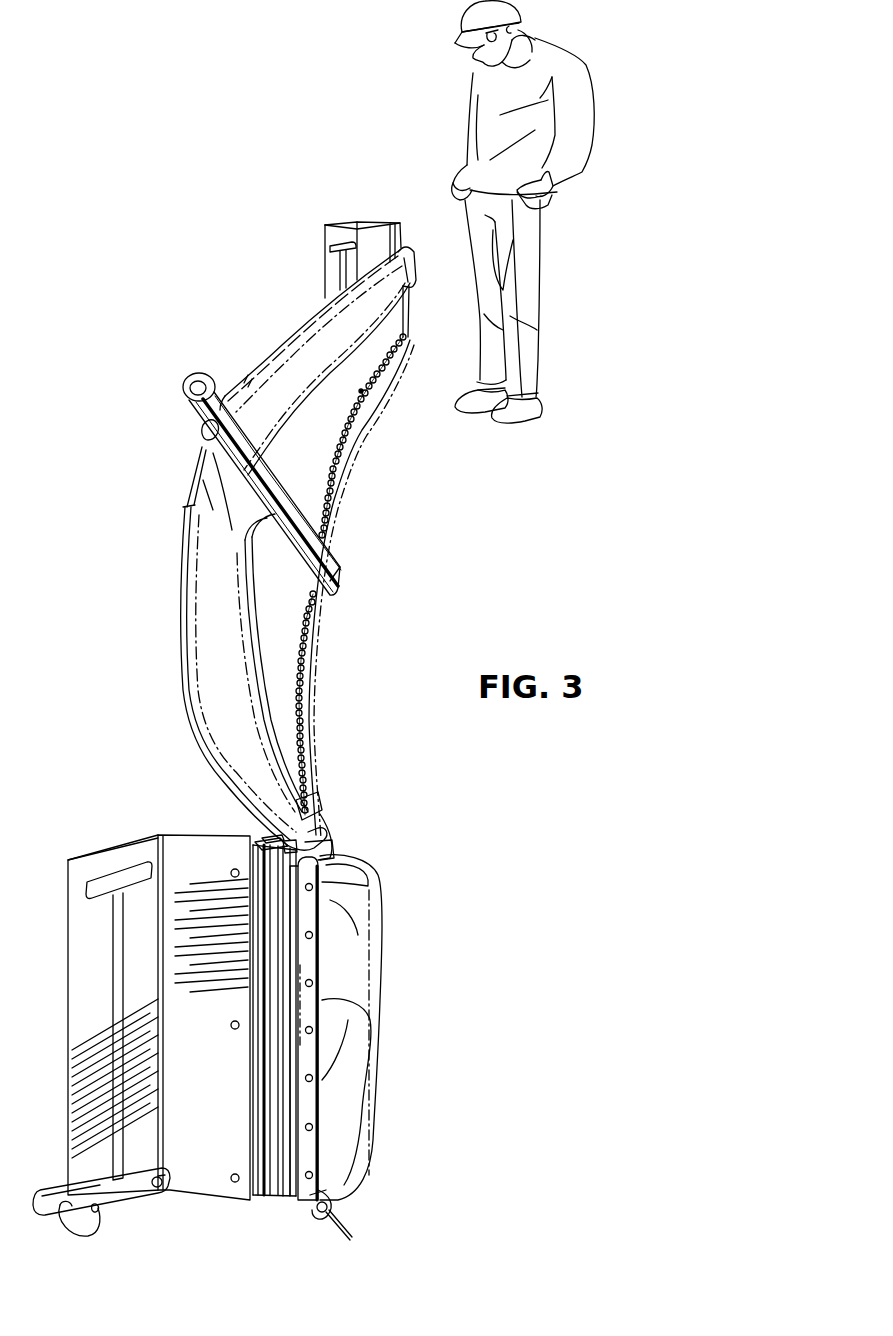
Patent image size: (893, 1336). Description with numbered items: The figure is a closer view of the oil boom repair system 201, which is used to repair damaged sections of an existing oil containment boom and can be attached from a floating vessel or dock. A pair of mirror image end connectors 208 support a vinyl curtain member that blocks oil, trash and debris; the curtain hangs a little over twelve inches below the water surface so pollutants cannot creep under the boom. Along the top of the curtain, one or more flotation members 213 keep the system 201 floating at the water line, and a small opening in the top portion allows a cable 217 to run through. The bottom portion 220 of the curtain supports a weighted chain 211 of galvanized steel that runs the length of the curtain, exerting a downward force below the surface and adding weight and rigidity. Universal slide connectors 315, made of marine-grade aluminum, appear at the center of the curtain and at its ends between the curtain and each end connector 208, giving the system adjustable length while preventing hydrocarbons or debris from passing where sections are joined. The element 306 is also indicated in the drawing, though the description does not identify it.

The oil boom repair system 201 is at (428, 708).
The end connector 208 is at (343, 232).
The weighted chain 211 is at (340, 483).
The flotation member 213 is at (280, 340).
The cable 217 is at (178, 570).
The bottom portion 220 is at (357, 442).
The chain link connector 306 is at (361, 391).
The universal slide connector 315 is at (322, 998).